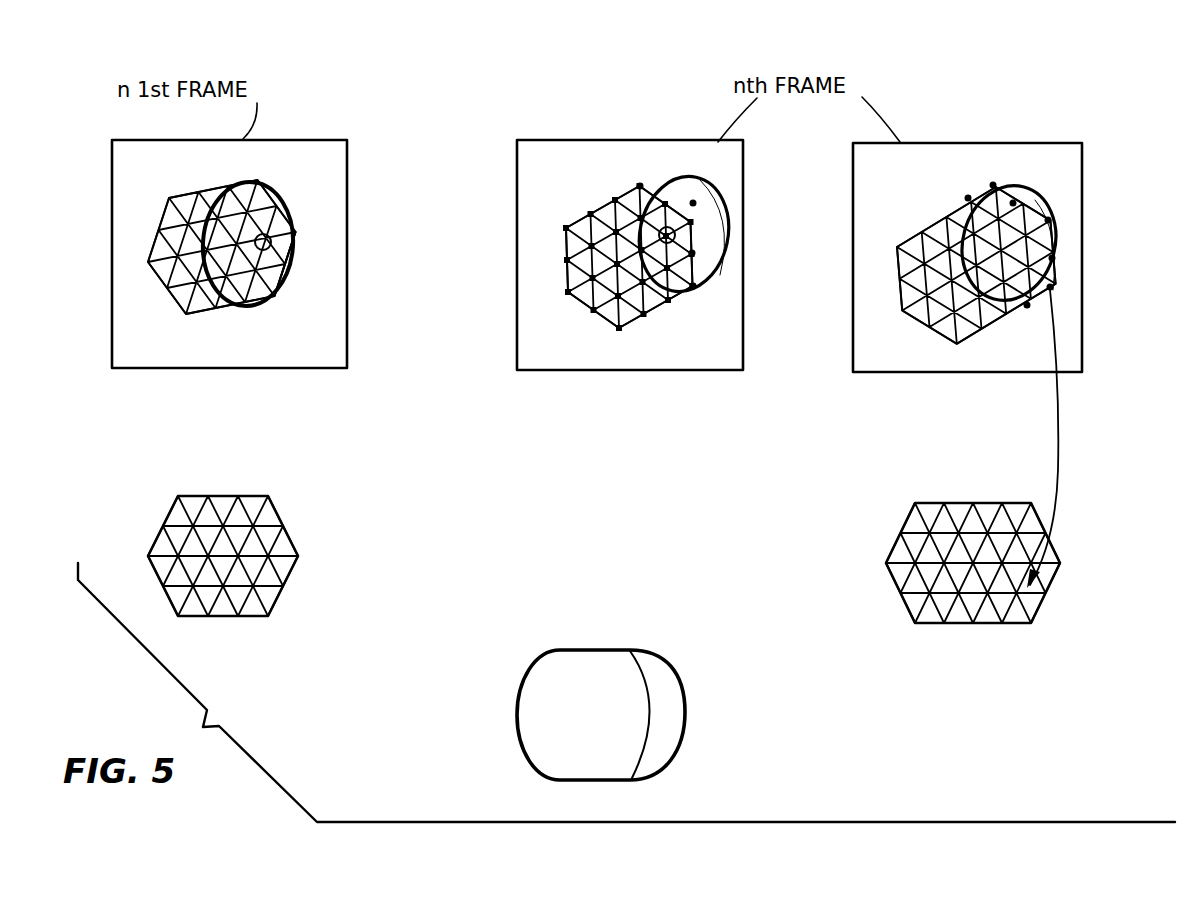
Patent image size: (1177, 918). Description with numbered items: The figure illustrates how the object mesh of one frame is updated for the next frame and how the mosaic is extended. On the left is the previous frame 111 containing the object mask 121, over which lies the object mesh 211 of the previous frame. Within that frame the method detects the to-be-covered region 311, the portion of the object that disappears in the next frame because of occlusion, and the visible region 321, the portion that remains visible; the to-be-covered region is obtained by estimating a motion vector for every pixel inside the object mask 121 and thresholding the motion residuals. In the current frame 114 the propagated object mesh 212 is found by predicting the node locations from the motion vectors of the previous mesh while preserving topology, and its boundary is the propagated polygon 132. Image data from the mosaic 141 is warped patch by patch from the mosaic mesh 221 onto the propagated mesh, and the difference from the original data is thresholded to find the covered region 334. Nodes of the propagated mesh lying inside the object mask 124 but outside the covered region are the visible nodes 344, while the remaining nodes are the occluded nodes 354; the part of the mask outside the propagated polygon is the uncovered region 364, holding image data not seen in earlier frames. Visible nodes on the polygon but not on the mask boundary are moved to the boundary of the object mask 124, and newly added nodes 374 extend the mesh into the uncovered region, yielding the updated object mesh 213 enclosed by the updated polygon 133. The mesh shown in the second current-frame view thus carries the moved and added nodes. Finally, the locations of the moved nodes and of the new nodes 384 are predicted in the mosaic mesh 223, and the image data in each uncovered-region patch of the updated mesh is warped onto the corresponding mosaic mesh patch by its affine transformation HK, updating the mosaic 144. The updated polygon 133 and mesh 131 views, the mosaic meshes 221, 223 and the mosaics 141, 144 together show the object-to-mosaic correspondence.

The previous frame 111 is at (348, 357).
The current frame 114 is at (743, 323).
The object mask 121 is at (293, 266).
The object mask 124 is at (727, 220).
The 2-D mesh in first frame 131 is at (200, 313).
The propagated polygon 132 is at (632, 327).
The updated polygon 133 is at (932, 327).
The object mesh 211 is at (183, 300).
The propagated object mesh 212 is at (615, 318).
The updated object mesh 213 is at (962, 332).
The to-be-covered region 311 is at (287, 220).
The visible region 321 is at (270, 283).
The covered region 334 is at (667, 233).
The visible nodes 344 is at (696, 253).
The occluded nodes 354 is at (648, 313).
The uncovered region 364 is at (693, 203).
The newly added nodes 374 is at (640, 182).
The new nodes 384 is at (1060, 242).
The mosaic mesh 221 is at (175, 600).
The mosaic mesh 223 is at (912, 602).
The mosaic 141 is at (528, 698).
The mosaic 144 is at (658, 680).
The affine transformation HK is at (1073, 470).